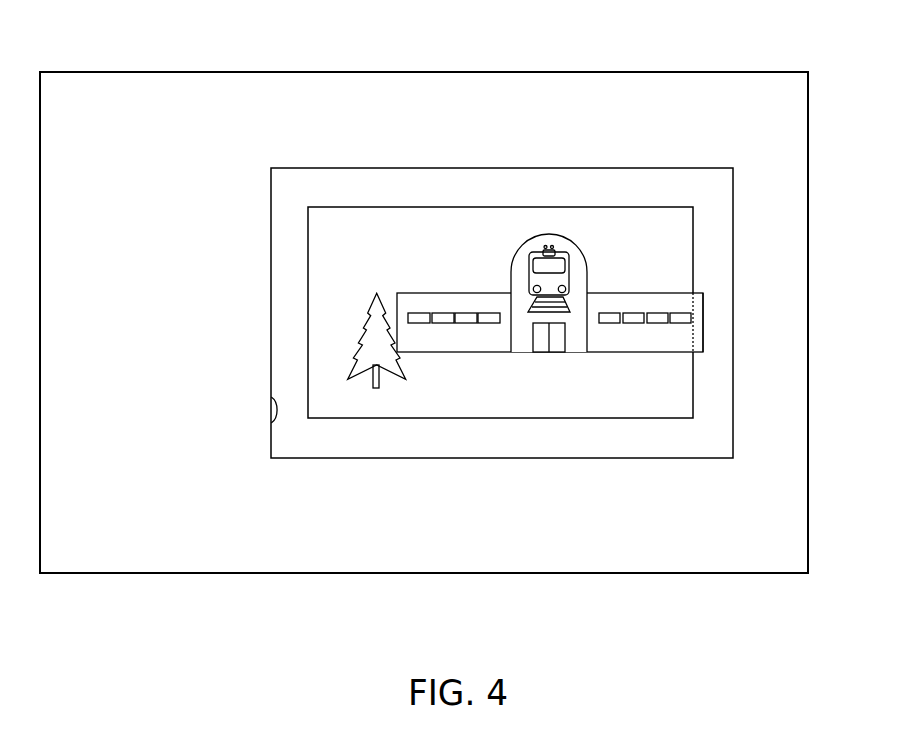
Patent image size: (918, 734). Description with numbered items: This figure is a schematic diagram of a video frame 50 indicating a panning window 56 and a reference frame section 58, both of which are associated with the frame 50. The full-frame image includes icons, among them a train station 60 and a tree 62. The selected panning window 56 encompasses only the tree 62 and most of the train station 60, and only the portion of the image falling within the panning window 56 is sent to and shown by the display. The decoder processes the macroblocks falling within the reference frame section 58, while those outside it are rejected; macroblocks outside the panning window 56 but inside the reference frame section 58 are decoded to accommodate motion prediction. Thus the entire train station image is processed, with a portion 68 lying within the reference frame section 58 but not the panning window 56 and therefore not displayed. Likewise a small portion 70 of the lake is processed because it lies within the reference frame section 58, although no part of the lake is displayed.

The video frame 50 is at (693, 72).
The panning window 56 is at (500, 207).
The reference frame section 58 is at (560, 168).
The train station 60 is at (477, 293).
The tree 62 is at (362, 336).
The portion of the train station 68 is at (716, 300).
The small portion of the lake 70 is at (286, 436).